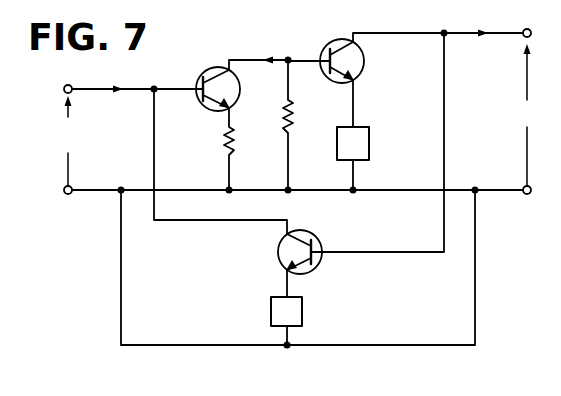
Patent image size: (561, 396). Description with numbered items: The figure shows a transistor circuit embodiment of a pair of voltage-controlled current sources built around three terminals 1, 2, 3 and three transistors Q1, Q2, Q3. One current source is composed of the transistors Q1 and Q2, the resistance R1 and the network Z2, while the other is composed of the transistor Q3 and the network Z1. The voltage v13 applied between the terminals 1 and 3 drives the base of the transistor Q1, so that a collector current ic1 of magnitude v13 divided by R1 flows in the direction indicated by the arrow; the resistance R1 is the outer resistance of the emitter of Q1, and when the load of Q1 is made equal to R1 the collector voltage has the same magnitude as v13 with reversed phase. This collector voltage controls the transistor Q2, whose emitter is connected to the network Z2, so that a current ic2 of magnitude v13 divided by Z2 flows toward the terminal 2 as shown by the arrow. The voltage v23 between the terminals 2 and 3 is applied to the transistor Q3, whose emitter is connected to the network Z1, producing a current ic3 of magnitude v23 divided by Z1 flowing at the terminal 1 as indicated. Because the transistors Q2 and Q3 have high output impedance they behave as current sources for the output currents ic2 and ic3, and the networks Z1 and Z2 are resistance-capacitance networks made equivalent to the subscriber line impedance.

The terminal 1 is at (64, 86).
The terminal 2 is at (529, 29).
The terminal 3 is at (64, 192).
The transistor Q1 is at (208, 71).
The transistor Q2 is at (338, 41).
The transistor Q3 is at (280, 236).
The resistance R1 is at (276, 122).
The network Z1 is at (286, 307).
The network Z2 is at (353, 135).
The current ic1 is at (259, 48).
The current ic2 is at (487, 22).
The current ic3 is at (111, 77).
The voltage v13 is at (74, 141).
The voltage v23 is at (533, 115).